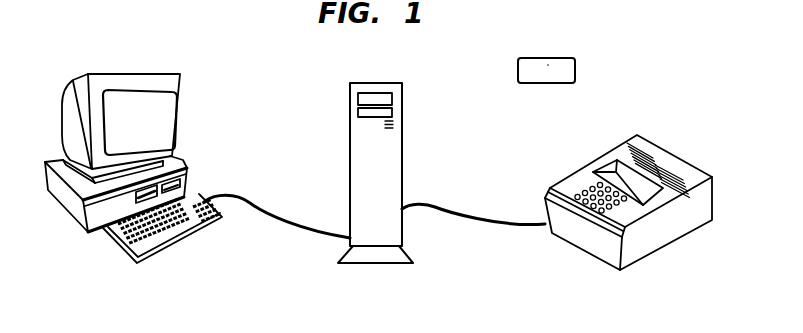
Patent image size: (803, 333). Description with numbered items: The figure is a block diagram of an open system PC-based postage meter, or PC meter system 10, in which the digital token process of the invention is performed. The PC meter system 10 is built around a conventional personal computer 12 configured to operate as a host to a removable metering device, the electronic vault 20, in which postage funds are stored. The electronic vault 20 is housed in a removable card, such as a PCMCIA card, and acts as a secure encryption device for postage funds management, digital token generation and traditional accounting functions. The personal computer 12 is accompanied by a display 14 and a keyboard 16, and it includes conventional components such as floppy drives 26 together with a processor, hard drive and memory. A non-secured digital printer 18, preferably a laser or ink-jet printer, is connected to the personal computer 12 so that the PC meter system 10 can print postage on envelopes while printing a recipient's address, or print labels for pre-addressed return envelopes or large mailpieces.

The PC meter system 10 is at (714, 125).
The personal computer 12 is at (382, 166).
The display 14 is at (181, 103).
The keyboard 16 is at (163, 252).
The non-secured digital printer 18 is at (648, 260).
The electronic vault 20 is at (575, 73).
The floppy drive 26 is at (358, 99).